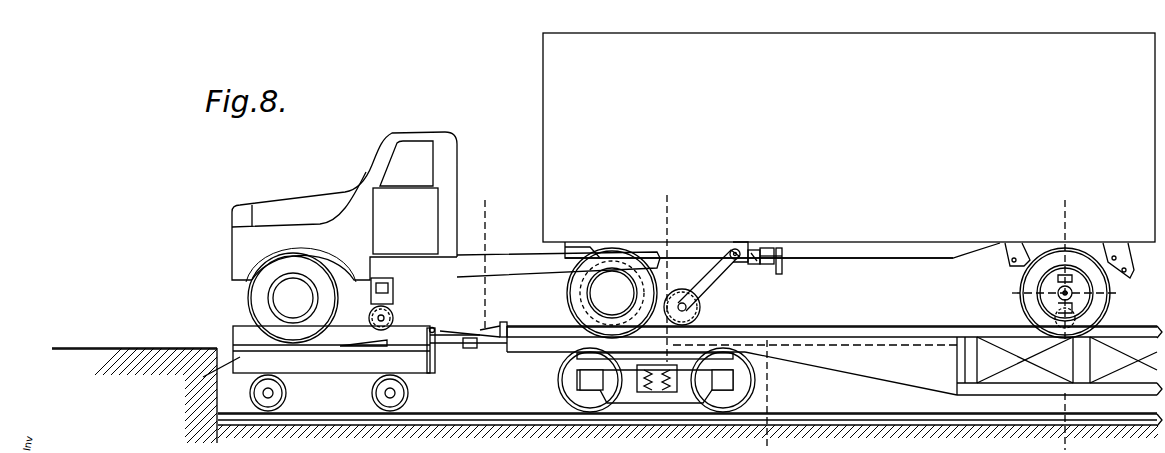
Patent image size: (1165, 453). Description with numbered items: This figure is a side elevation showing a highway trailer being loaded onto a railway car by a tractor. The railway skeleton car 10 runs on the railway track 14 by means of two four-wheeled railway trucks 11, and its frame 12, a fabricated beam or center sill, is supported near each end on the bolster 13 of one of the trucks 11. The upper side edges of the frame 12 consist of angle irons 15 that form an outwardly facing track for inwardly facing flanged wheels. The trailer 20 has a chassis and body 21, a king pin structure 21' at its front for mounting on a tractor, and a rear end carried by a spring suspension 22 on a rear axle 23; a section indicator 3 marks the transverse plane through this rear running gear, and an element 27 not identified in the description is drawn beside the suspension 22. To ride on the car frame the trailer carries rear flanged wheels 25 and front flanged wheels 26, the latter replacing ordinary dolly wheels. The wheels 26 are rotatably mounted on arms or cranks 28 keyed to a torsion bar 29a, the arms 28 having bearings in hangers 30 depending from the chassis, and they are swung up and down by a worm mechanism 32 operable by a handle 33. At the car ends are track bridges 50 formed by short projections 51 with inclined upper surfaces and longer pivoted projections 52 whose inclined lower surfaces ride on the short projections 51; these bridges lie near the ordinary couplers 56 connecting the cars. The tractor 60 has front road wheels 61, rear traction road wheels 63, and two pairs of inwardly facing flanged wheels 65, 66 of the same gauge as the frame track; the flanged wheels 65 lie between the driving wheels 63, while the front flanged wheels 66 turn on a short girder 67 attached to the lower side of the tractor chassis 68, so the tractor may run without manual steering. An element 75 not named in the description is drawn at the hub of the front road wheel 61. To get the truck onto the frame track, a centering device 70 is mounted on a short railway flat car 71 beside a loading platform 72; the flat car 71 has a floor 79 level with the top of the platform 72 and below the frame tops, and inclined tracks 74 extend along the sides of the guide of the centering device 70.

The section line 3- 3 is at (1052, 211).
The railway skeleton car 10 is at (917, 322).
The four-wheeled railway truck 11 is at (568, 381).
The frame 12 is at (900, 362).
The bolster 13 is at (676, 367).
The railway track 14 is at (838, 413).
The angle irons 15 is at (798, 328).
The trailer 20 is at (816, 128).
The chassis and body 21 is at (782, 261).
The king pin structure 21' is at (585, 226).
The spring suspension 22 is at (1106, 245).
The rear axle 23 is at (1018, 293).
The flanged wheels 25 is at (1116, 294).
The front flanged wheels 26 is at (703, 307).
The front suspension bracket 27 is at (1040, 240).
The arms or cranks 28 is at (714, 276).
The torsion bar 29a is at (742, 258).
The hangers 30 is at (735, 249).
The worm mechanism 32 is at (752, 266).
The handle 33 is at (784, 270).
The track bridges 50 is at (490, 354).
The short projections 51 is at (462, 344).
The longer pivoted projections 52 is at (487, 330).
The couplers 56 is at (467, 350).
The tractor 60 is at (285, 195).
The front road wheels 61 is at (250, 286).
The rear traction road wheels 63 is at (574, 288).
The flanged wheels 65 is at (584, 300).
The front flanged wheels 66 is at (394, 317).
The short girder 67 is at (393, 282).
The chassis 68 is at (502, 267).
The centering device 70 is at (230, 332).
The short railway flat car 71 is at (345, 366).
The loading platform 72 is at (112, 348).
The inclined tracks 74 is at (362, 340).
The tractor front wheel 75 is at (308, 338).
The floor 79 is at (240, 358).